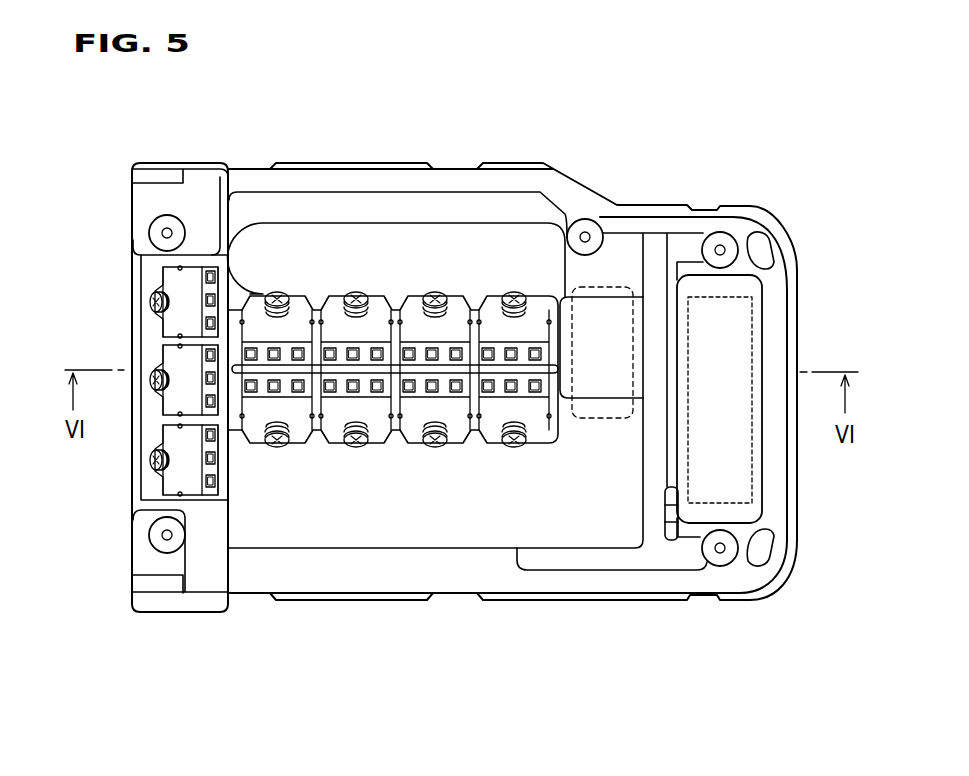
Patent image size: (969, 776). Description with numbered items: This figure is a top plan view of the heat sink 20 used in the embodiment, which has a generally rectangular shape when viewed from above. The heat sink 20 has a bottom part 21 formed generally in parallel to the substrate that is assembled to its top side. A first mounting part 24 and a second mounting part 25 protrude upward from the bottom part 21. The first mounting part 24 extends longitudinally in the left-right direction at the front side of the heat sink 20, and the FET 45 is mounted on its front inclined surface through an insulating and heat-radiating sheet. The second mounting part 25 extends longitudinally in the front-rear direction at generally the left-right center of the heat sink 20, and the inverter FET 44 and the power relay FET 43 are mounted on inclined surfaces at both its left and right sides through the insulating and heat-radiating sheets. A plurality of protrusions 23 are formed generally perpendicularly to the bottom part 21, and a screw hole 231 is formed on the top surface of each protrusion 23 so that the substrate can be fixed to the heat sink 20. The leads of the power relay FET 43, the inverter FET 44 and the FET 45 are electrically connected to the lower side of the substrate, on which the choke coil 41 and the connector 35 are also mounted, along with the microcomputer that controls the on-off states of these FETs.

The heat sink 20 is at (255, 153).
The bottom part 21 is at (419, 246).
The protrusion 23 is at (152, 231).
The screw hole 231 is at (164, 232).
The first mounting part 24 is at (175, 419).
The second mounting part 25 is at (395, 325).
The connector 35 is at (753, 497).
The choke coil 41 is at (623, 287).
The power relay FET 43 is at (492, 320).
The inverter FET 44 is at (298, 317).
The FET 45 is at (173, 285).